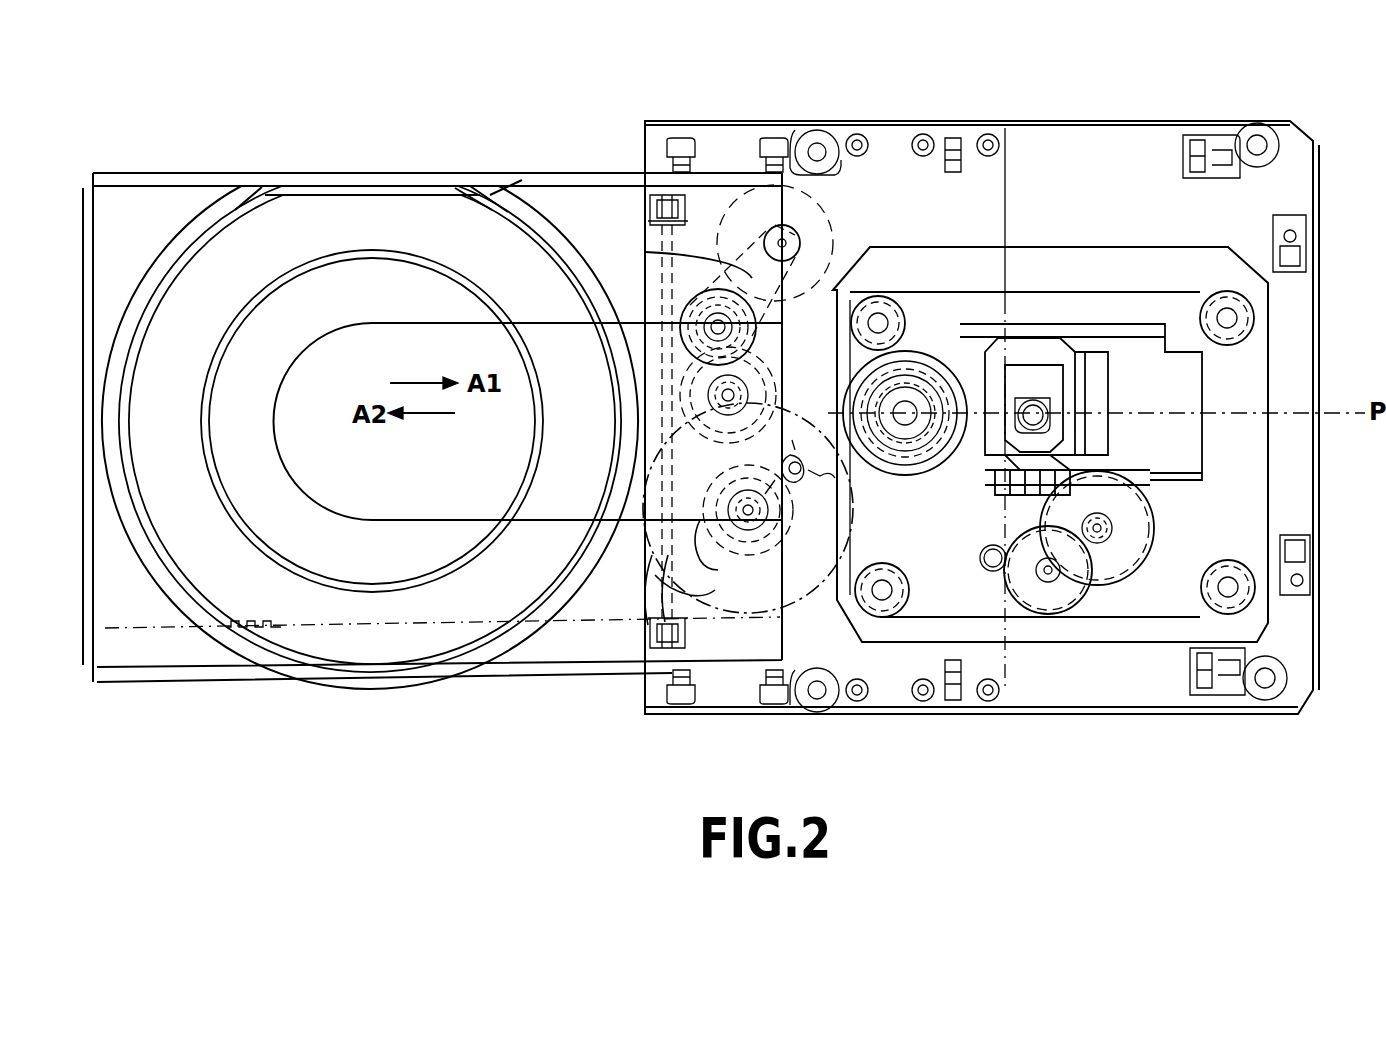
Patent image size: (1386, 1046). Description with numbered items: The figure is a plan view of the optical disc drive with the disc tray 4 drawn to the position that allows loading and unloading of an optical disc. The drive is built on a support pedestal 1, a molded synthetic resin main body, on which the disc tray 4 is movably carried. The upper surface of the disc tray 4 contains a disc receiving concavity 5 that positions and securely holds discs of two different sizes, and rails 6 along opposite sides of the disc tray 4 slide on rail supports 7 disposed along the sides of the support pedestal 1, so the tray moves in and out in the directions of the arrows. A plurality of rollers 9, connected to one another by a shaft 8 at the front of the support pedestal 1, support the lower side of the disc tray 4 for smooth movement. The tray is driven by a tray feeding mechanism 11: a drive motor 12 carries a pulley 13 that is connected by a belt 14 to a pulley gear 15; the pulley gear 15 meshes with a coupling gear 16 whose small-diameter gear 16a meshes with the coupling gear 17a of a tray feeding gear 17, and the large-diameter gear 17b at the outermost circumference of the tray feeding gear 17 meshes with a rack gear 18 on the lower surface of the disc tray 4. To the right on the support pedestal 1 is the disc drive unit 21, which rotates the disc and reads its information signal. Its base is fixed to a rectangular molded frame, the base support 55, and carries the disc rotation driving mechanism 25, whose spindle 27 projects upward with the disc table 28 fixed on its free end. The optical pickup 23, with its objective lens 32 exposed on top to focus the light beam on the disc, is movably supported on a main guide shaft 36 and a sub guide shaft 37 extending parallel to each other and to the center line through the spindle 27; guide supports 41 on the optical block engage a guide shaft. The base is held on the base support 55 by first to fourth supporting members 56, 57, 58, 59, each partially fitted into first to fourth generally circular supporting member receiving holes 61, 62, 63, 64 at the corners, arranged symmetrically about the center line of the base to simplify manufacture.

The support pedestal 1 is at (1068, 128).
The disc tray 4 is at (446, 172).
The disc receiving concavity 5 is at (240, 208).
The rails 6 is at (517, 175).
The rail supports 7 is at (670, 150).
The shaft 8 is at (680, 330).
The rollers 9 is at (652, 200).
The tray feeding mechanism 11 is at (660, 386).
The drive motor 12 is at (790, 185).
The pulley 13 is at (789, 224).
The belt 14 is at (658, 252).
The pulley gear 15 is at (690, 352).
The coupling gear 16 is at (700, 422).
The small-diameter gear 16a is at (704, 490).
The tray feeding gear 17 is at (660, 548).
The coupling gear 17a is at (700, 522).
The large-diameter gear 17b is at (660, 575).
The rack gear 18 is at (240, 618).
The disc drive unit 21 is at (1100, 250).
The optical pickup 23 is at (1105, 382).
The disc rotation driving mechanism 25 is at (908, 551).
The spindle 27 is at (908, 440).
The disc table 28 is at (925, 352).
The objective lens 32 is at (1032, 400).
The main guide shaft 36 is at (1180, 490).
The sub guide shaft 37 is at (1122, 328).
The guide supports 41 is at (1035, 330).
The base support 55 is at (1188, 265).
The first supporting member 56 is at (884, 312).
The second supporting member 57 is at (1245, 320).
The third supporting member 58 is at (886, 612).
The fourth supporting member 59 is at (1228, 572).
The first supporting member receiving hole 61 is at (898, 300).
The second supporting member receiving hole 62 is at (1240, 340).
The third supporting member receiving hole 63 is at (902, 590).
The fourth supporting member receiving hole 64 is at (1205, 590).